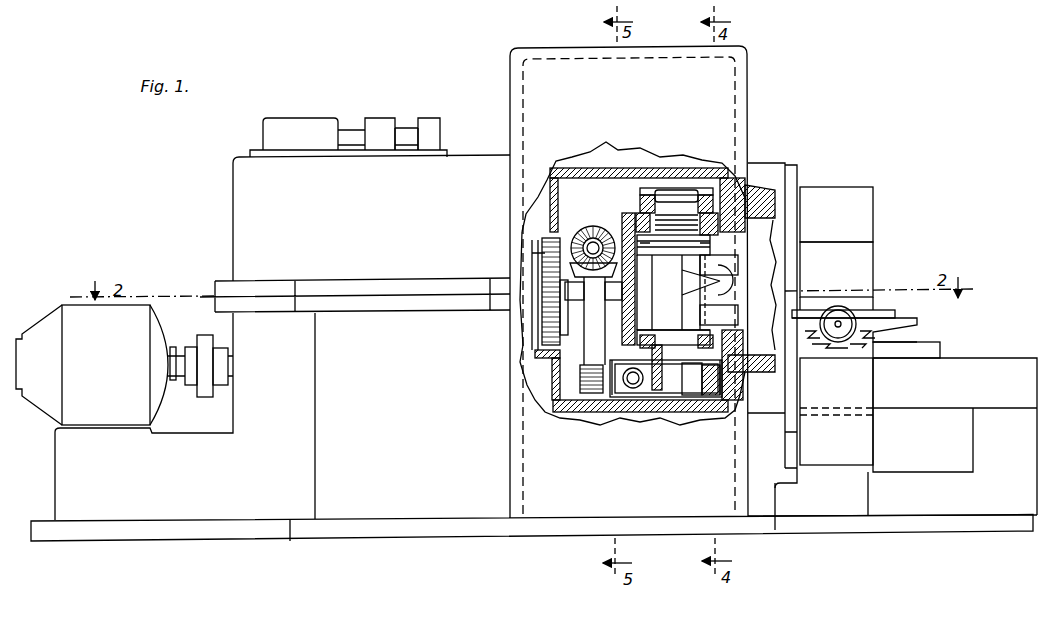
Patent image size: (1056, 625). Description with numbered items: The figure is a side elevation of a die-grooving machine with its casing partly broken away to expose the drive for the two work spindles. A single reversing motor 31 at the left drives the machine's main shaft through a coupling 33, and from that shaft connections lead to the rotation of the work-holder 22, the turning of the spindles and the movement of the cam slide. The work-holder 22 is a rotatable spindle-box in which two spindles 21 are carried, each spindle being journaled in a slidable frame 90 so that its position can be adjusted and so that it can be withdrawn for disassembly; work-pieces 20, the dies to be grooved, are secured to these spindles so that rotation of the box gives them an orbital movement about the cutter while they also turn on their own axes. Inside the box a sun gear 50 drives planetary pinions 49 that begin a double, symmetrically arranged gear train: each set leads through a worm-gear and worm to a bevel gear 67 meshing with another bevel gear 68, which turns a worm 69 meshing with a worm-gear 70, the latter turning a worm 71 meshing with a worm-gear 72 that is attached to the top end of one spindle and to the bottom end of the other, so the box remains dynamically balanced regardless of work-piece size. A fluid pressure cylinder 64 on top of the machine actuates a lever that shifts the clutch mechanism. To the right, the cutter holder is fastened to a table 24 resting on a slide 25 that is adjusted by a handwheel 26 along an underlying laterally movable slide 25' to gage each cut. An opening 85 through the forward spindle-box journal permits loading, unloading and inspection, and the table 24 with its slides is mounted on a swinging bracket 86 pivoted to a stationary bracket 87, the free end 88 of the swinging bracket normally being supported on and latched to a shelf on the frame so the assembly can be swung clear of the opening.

The work-piece 20 is at (738, 266).
The spindle 21 is at (655, 309).
The work-holder 22 is at (674, 400).
The table 24 is at (897, 310).
The slide 25 is at (877, 329).
The laterally movable slide 25' is at (906, 348).
The handwheel 26 is at (845, 347).
The motor 31 is at (92, 374).
The coupling 33 is at (212, 338).
The planetary pinion 49 is at (545, 318).
The sun gear 50 is at (528, 243).
The fluid pressure cylinder 64 is at (405, 128).
The bevel gear 67 is at (569, 234).
The bevel gear 68 is at (618, 234).
The worm 69 is at (581, 379).
The worm-gear 70 is at (601, 400).
The worm 71 is at (612, 403).
The worm-gear 72 is at (703, 400).
The opening 85 is at (748, 233).
The swinging bracket 86 is at (862, 262).
The stationary bracket 87 is at (862, 226).
The free end 88 is at (868, 398).
The slidable frame 90 is at (640, 205).